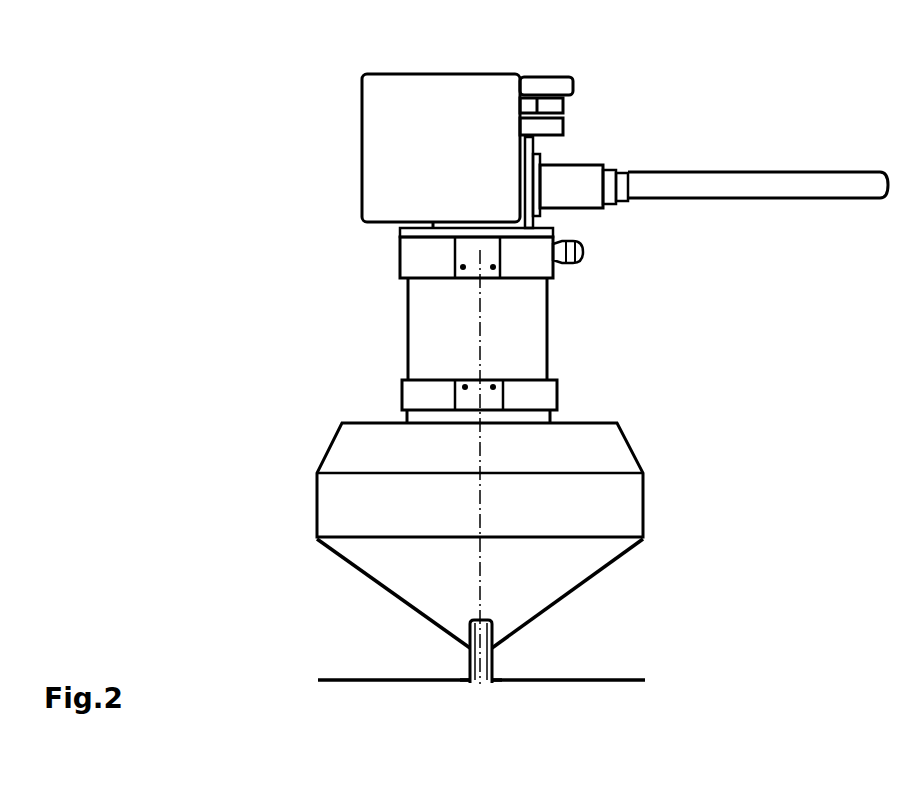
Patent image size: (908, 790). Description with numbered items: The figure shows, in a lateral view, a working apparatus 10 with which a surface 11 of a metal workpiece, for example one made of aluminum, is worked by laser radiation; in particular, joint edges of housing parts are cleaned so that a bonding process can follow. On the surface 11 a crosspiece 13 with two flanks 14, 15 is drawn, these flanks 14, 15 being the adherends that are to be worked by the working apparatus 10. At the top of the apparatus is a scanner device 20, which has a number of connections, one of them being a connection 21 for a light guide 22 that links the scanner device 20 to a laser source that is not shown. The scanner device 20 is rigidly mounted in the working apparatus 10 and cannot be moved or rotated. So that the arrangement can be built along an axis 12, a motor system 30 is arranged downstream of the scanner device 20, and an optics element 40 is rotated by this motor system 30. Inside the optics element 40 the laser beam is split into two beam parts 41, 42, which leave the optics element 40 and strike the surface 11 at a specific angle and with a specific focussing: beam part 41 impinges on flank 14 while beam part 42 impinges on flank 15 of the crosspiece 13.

The working apparatus 10 is at (310, 186).
The surface 11 is at (580, 678).
The axis 12 is at (481, 350).
The crosspiece 13 is at (482, 615).
The flank 14 is at (493, 667).
The flank 15 is at (470, 667).
The scanner device 20 is at (386, 120).
The connection 21 is at (545, 162).
The light guide 22 is at (700, 183).
The motor system 30 is at (437, 333).
The optics element 40 is at (360, 447).
The beam part 41 is at (608, 565).
The beam part 42 is at (363, 577).